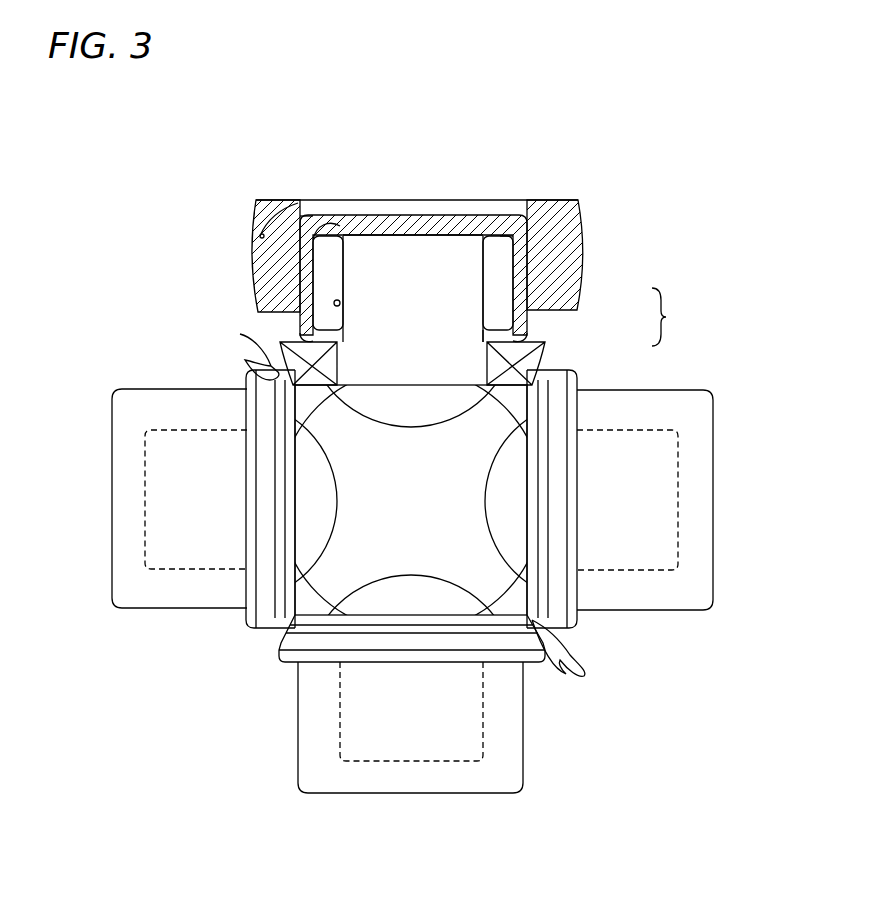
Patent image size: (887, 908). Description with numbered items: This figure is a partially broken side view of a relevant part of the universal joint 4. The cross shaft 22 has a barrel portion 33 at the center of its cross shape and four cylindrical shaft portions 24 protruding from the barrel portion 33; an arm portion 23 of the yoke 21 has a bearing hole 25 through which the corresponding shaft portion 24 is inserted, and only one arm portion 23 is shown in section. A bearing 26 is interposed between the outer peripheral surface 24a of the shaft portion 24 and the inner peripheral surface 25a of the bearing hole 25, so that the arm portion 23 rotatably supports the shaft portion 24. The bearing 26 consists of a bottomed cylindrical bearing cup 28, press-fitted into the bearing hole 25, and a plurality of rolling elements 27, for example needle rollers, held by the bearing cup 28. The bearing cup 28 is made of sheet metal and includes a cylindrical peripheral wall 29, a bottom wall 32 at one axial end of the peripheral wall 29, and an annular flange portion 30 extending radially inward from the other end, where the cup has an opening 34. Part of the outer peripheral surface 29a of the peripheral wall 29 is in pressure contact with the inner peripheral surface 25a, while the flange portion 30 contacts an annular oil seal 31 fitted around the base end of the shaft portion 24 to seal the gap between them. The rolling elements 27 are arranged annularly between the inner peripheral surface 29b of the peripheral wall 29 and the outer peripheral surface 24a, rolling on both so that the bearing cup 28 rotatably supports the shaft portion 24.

The universal joint 4 is at (534, 163).
The yoke 21 is at (565, 191).
The cross shaft 22 is at (536, 405).
The arm portion 23 is at (577, 234).
The shaft portion 24 is at (365, 281).
The outer peripheral surface 24a is at (341, 304).
The bearing hole 25 is at (503, 231).
The inner peripheral surface 25a is at (315, 203).
The bearing 26 is at (674, 317).
The rolling elements 27 is at (518, 268).
The bearing cup 28 is at (538, 317).
The peripheral wall 29 is at (296, 253).
The outer peripheral surface 29a is at (262, 236).
The inner peripheral surface 29b is at (337, 258).
The annular flange portion 30 is at (337, 357).
The annular oil seal 31 is at (406, 509).
The bottom wall 32 is at (412, 222).
The barrel portion 33 is at (412, 507).
The opening 34 is at (483, 340).